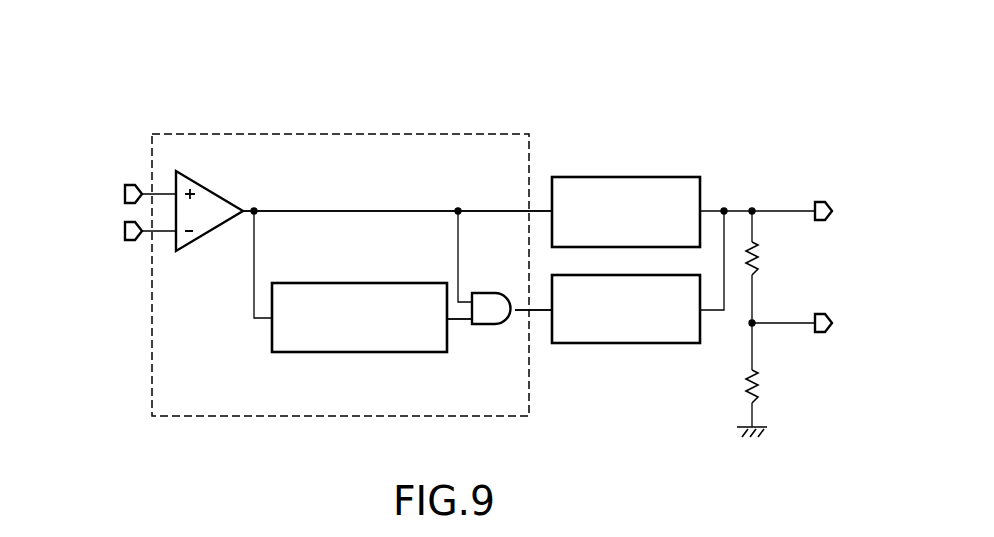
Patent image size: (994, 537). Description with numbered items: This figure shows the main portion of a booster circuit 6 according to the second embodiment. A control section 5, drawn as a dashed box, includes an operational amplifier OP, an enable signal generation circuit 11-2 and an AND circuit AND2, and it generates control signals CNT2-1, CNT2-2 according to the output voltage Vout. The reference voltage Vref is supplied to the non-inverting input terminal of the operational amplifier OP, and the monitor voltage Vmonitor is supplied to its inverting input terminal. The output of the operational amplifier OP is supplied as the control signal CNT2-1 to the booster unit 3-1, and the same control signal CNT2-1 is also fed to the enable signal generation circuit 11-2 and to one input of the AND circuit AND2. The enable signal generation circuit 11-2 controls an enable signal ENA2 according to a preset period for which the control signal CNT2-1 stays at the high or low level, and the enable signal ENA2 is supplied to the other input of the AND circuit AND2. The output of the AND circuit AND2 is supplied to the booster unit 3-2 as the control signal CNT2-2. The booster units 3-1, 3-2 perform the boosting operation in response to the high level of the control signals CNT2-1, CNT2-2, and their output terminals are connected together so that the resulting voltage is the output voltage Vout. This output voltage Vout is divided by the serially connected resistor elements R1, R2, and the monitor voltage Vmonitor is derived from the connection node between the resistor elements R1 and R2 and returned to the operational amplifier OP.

The booster circuit 6 is at (574, 73).
The control section 5 is at (365, 133).
The operational amplifier OP is at (218, 190).
The reference voltage Vref is at (111, 195).
The monitor voltage Vmonitor is at (448, 275).
The output voltage Vout is at (820, 198).
The control signal CNT2-1 is at (356, 210).
The enable signal generation circuit 11-2 is at (370, 283).
The AND circuit AND2 is at (493, 296).
The enable signal ENA2 is at (458, 320).
The control signal CNT2-2 is at (537, 312).
The booster unit 3-1 is at (660, 177).
The booster unit 3-2 is at (663, 343).
The resistor element R1 is at (765, 258).
The resistor element R2 is at (765, 387).